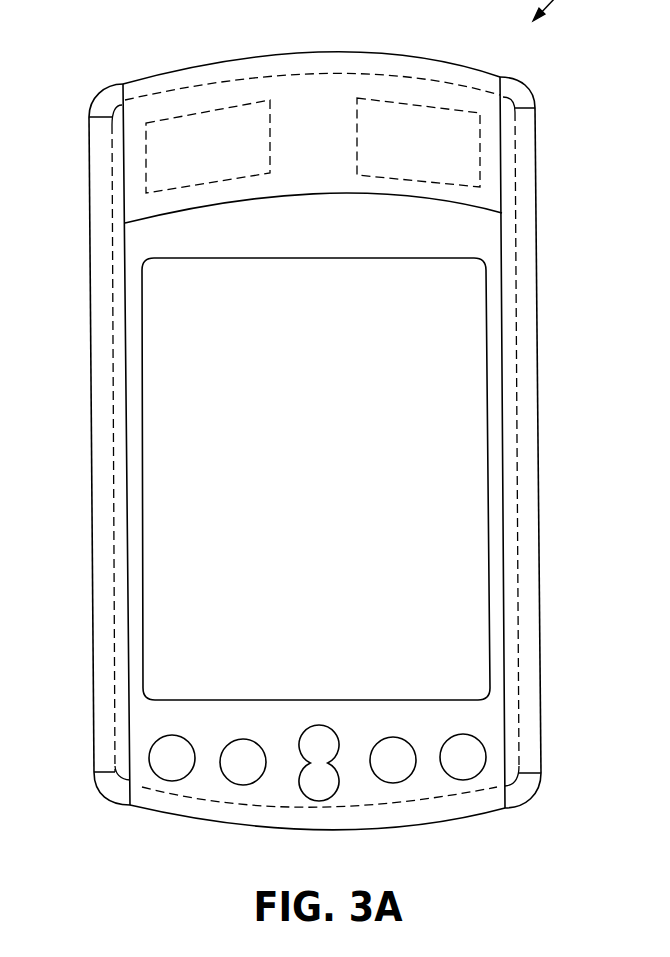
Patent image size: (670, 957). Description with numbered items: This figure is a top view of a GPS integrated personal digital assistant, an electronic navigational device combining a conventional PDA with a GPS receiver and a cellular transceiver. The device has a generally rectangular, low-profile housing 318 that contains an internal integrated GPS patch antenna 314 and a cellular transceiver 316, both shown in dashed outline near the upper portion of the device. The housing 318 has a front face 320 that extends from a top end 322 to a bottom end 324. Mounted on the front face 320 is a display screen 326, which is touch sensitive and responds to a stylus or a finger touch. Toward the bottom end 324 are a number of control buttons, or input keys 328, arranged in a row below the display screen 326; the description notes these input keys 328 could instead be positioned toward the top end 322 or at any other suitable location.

The internal integrated GPS patch antenna 314 is at (207, 118).
The cellular transceiver 316 is at (412, 127).
The housing 318 is at (90, 217).
The front face 320 is at (142, 252).
The top end 322 is at (333, 50).
The bottom end 324 is at (424, 822).
The display screen 326 is at (440, 498).
The input keys 328 is at (167, 783).